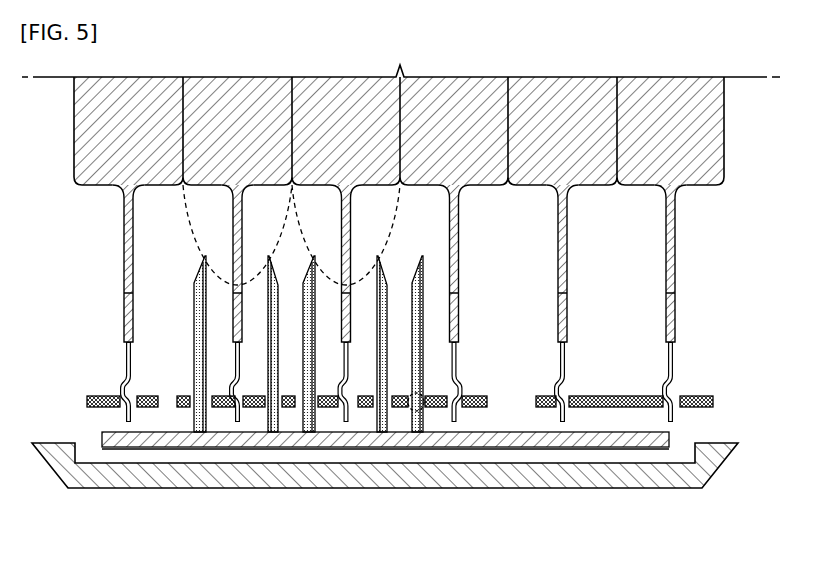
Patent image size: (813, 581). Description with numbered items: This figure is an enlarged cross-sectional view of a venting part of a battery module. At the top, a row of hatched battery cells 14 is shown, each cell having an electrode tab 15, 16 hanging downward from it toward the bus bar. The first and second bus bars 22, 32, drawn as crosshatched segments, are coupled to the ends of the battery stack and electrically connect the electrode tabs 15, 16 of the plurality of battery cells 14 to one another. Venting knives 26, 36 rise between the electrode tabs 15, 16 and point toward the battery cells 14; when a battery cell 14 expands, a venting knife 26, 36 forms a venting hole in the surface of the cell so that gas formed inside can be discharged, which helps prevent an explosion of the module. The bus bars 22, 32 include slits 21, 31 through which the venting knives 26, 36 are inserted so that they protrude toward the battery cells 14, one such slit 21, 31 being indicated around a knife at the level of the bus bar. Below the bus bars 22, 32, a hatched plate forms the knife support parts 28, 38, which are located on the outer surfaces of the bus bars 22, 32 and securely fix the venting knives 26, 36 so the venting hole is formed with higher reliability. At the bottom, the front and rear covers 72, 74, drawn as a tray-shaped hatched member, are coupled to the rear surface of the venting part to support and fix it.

The battery cell 14 is at (717, 128).
The electrode tab 15 is at (456, 303).
The electrode tab 16 is at (676, 240).
The slit 21 is at (368, 403).
The slit 31 is at (412, 402).
The first bus bar 22 is at (432, 368).
The second bus bar 32 is at (695, 396).
The venting knife 26 is at (202, 344).
The venting knife 36 is at (197, 363).
The knife support part 28 is at (385, 496).
The knife support part 38 is at (158, 440).
The front cover 72 is at (385, 501).
The rear cover 74 is at (615, 477).